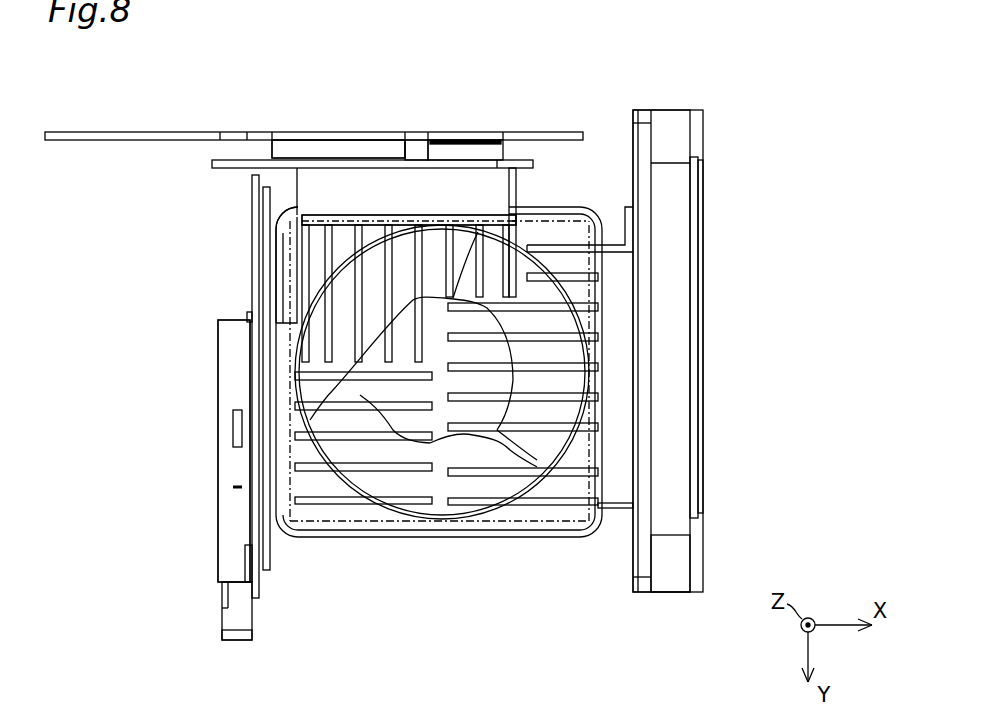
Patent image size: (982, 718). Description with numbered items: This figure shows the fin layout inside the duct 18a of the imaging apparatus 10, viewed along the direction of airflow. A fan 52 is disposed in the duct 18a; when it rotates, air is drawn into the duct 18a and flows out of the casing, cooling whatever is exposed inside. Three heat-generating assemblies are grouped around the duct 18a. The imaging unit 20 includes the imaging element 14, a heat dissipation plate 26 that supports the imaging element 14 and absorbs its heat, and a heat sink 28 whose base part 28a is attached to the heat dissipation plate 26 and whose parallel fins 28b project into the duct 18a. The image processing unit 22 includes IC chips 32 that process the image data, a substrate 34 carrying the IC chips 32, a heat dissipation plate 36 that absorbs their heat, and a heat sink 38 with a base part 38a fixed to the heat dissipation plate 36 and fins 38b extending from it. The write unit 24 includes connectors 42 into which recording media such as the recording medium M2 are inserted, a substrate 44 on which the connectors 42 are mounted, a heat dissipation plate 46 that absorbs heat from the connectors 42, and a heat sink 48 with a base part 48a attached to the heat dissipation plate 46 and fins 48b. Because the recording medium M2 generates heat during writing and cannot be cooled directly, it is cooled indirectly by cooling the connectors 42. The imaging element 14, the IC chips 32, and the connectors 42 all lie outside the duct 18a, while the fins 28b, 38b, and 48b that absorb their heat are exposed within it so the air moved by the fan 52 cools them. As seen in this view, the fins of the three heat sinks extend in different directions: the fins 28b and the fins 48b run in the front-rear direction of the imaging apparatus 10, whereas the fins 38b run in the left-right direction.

The imaging apparatus 10 is at (740, 137).
The imaging element 14 is at (704, 222).
The duct 18a is at (441, 530).
The imaging unit 20 is at (748, 365).
The image processing unit 22 is at (304, 122).
The write unit 24 is at (180, 429).
The heat dissipation plate 26 is at (666, 586).
The heat sink 28 is at (599, 337).
The base part 28a is at (623, 364).
The fins 28b is at (582, 307).
The IC chips 32 is at (353, 139).
The substrate 34 is at (133, 131).
The heat dissipation plate 36 is at (211, 164).
The heat sink 38 is at (433, 265).
The base part 38a is at (428, 202).
The fins 38b is at (353, 240).
The connectors 42 is at (217, 505).
The substrate 44 is at (251, 284).
The heat dissipation plate 46 is at (268, 256).
The heat sink 48 is at (302, 396).
The base part 48a is at (282, 343).
The fins 48b is at (361, 464).
The fan 52 is at (534, 538).
The recording medium M2 is at (229, 619).